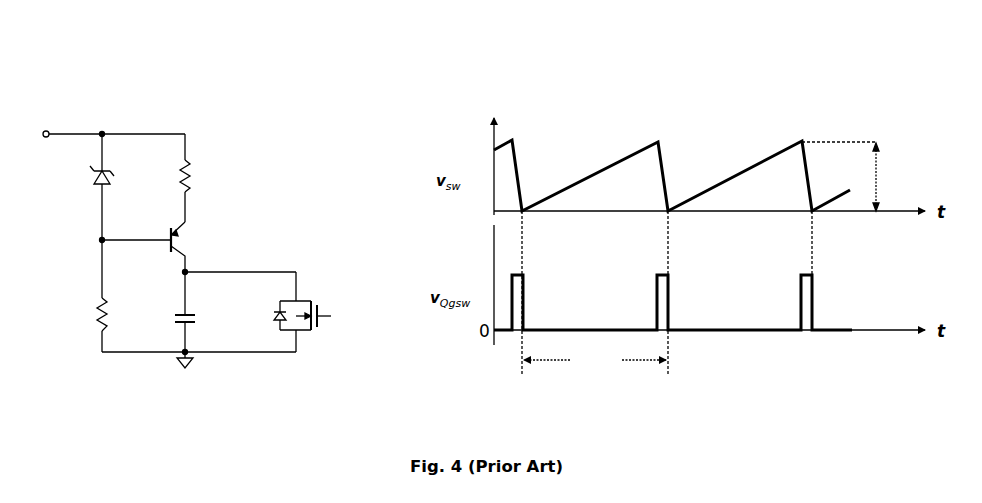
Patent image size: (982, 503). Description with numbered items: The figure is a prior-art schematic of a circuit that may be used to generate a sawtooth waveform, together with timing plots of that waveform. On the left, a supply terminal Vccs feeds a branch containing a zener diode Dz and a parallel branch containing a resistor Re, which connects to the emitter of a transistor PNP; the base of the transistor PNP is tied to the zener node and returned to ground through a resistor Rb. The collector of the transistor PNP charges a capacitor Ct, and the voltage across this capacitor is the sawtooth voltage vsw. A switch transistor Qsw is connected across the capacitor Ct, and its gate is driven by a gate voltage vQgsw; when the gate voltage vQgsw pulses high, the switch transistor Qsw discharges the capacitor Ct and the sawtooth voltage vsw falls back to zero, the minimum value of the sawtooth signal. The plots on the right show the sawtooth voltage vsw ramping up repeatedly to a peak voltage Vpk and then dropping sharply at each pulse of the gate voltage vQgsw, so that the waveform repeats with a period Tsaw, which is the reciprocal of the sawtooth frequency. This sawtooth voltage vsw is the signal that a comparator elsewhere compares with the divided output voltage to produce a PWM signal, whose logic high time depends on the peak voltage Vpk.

The supply voltage terminal Vccs is at (106, 121).
The zener diode Dz is at (84, 188).
The emitter resistor Re is at (165, 178).
The PNP transistor PNP is at (166, 247).
The base resistor Rb is at (80, 296).
The timing capacitor Ct is at (169, 312).
The sawtooth voltage vsw is at (240, 287).
The switch transistor Qsw is at (279, 312).
The switch gate voltage vQgsw is at (356, 320).
The peak voltage Vpk is at (894, 177).
The period Tsaw is at (595, 362).